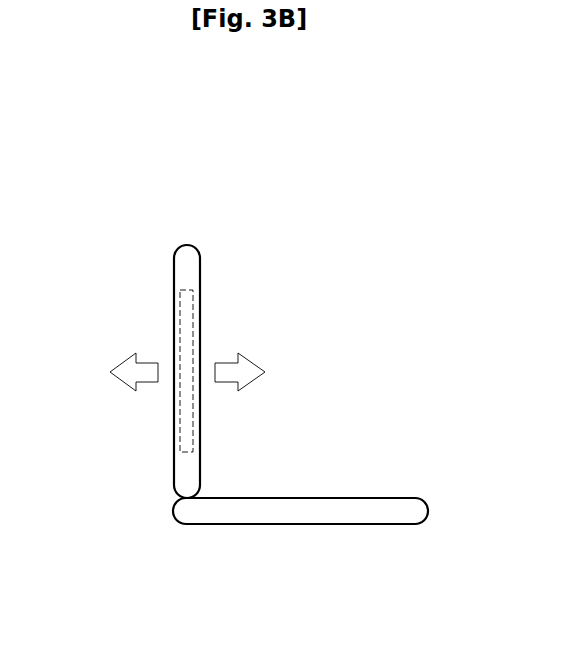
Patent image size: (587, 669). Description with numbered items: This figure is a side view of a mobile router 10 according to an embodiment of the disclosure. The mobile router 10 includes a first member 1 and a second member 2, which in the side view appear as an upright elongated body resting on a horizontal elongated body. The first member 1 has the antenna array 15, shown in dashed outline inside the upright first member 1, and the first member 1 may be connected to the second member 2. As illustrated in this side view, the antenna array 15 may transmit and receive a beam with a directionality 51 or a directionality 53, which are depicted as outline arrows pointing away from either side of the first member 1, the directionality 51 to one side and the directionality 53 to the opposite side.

The mobile router 10 is at (230, 84).
The first member 1 is at (184, 258).
The second member 2 is at (300, 507).
The antenna array 15 is at (193, 312).
The directionality 51 is at (122, 363).
The directionality 53 is at (252, 360).